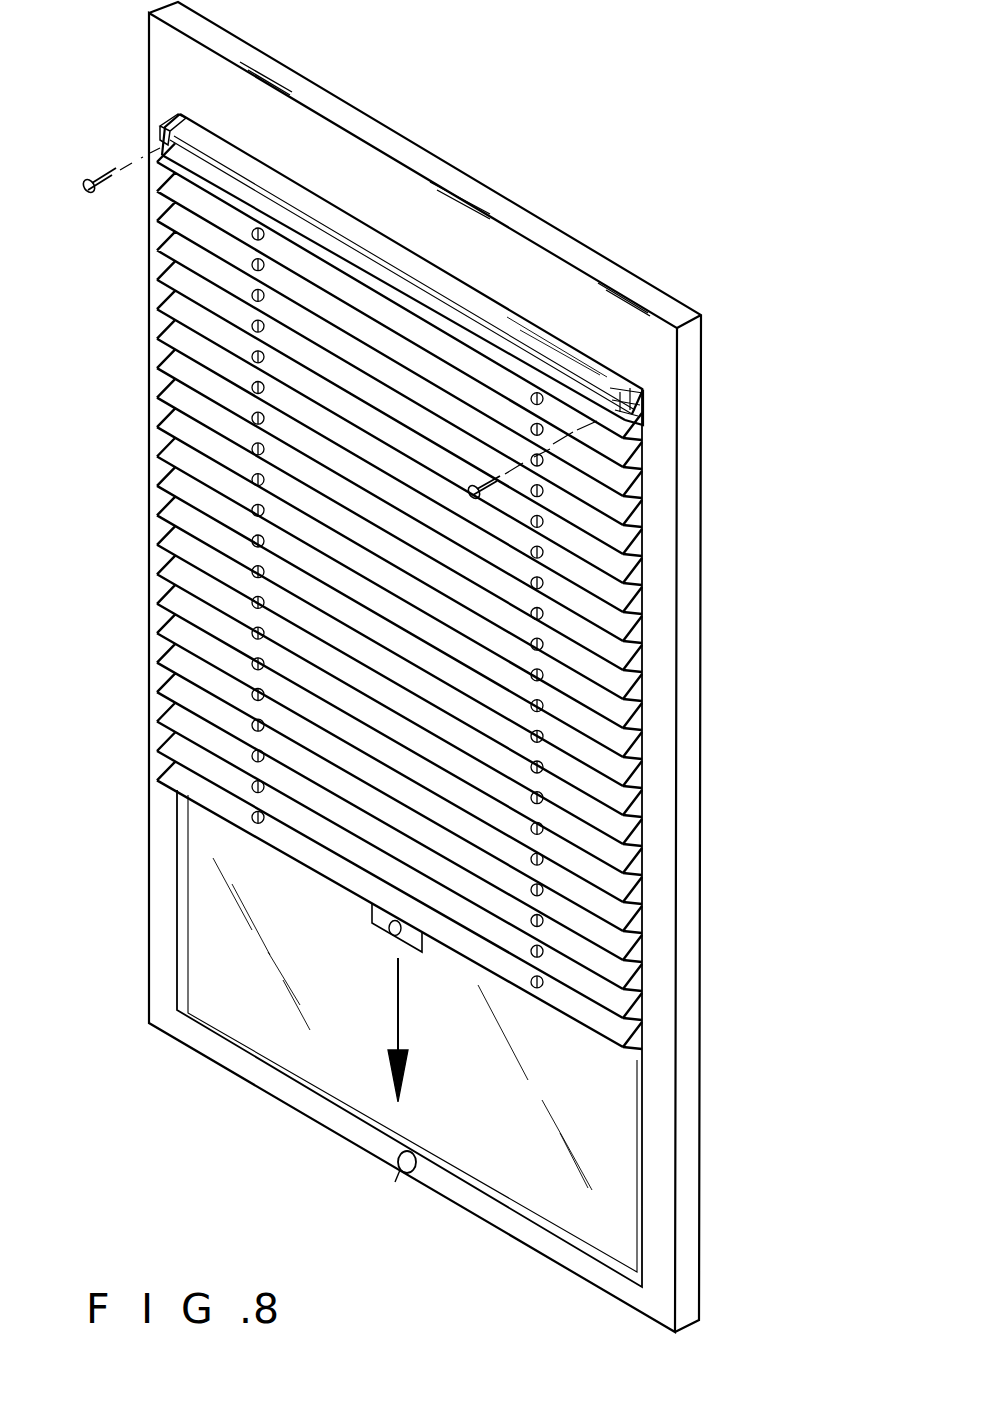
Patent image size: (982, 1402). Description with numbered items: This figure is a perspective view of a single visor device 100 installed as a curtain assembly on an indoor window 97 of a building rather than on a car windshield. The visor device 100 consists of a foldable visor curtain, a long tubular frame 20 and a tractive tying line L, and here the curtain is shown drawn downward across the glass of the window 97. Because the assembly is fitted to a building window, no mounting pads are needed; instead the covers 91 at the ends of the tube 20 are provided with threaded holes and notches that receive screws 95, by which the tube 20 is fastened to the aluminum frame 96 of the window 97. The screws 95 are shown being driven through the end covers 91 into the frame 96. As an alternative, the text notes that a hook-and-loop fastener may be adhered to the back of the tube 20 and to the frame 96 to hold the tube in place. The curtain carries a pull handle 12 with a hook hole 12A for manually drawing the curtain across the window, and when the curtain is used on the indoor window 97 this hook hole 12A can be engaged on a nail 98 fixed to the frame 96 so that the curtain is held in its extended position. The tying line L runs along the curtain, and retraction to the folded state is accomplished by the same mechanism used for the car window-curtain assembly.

The visor device 100 is at (543, 185).
The aluminum frame 96 is at (686, 420).
The indoor window 97 is at (625, 1182).
The nail 98 is at (403, 1172).
The tubular frame 20 is at (353, 230).
The tube end cover 91 is at (177, 122).
The screw 95 is at (86, 195).
The tractive tying line L is at (547, 917).
The pull handle 12 is at (422, 952).
The hook hole 12A is at (392, 932).